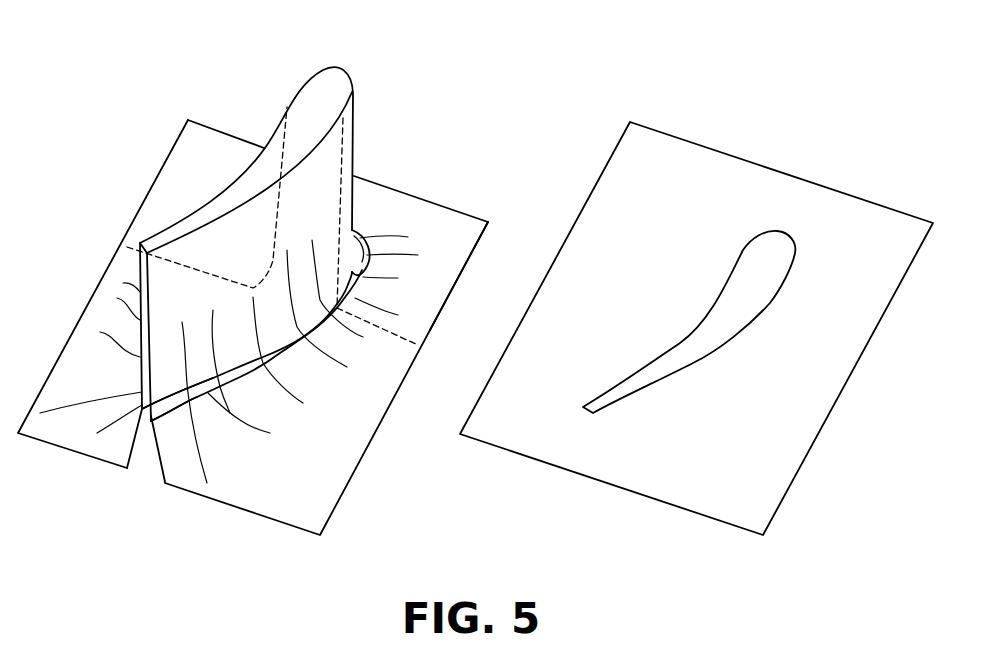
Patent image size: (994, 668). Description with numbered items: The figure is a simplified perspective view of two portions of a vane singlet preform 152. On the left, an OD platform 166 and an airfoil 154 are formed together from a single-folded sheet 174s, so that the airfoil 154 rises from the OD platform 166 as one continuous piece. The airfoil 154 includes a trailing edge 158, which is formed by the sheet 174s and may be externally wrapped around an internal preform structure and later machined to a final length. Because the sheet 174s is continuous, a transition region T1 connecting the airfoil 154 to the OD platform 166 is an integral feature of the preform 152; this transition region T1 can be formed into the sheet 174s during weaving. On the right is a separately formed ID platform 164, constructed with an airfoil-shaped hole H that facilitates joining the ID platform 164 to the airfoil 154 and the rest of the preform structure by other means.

The vane singlet preform 152 is at (468, 100).
The airfoil 154 is at (207, 301).
The trailing edge 158 is at (142, 382).
The ID platform 164 is at (610, 190).
The OD platform 166 is at (335, 442).
The single-folded sheet 174s is at (458, 310).
The transition region T1 is at (212, 395).
The airfoil-shaped hole H is at (737, 299).